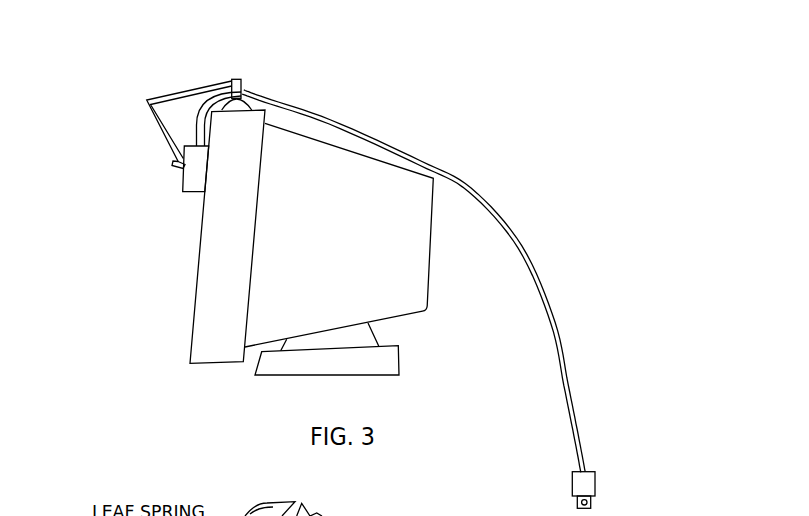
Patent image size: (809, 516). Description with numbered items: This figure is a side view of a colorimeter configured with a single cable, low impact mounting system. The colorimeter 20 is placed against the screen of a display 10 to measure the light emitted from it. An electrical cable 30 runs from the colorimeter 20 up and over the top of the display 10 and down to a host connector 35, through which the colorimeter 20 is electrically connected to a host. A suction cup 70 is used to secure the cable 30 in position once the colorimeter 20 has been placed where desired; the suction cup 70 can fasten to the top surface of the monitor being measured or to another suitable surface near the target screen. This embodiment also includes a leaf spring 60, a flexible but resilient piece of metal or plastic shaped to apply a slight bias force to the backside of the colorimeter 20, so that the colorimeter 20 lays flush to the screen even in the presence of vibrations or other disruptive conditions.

The display 10 is at (197, 274).
The colorimeter 20 is at (183, 178).
The electrical cable 30 is at (587, 230).
The host connector 35 is at (595, 480).
The leaf spring 60 is at (147, 108).
The suction cup 70 is at (250, 95).